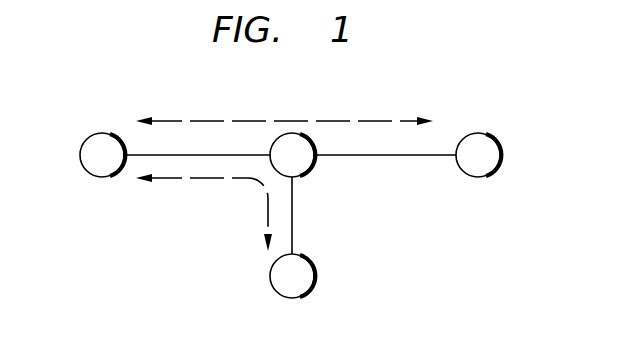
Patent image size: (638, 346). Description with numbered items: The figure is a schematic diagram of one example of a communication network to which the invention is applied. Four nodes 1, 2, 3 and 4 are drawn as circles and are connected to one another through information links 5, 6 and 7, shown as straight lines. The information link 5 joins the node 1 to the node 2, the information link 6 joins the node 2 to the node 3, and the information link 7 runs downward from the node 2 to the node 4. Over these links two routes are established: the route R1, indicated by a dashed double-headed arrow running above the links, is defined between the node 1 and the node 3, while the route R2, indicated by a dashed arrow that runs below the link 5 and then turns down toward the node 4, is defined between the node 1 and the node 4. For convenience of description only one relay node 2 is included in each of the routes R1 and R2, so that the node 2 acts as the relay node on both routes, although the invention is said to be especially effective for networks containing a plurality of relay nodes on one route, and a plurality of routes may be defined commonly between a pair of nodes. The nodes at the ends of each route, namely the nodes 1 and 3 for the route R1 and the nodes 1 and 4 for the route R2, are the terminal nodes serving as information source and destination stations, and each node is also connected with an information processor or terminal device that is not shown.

The node 1 is at (104, 177).
The relay node 2 is at (311, 167).
The node 3 is at (478, 177).
The node 4 is at (314, 276).
The information link 5 is at (186, 155).
The information link 6 is at (378, 155).
The information link 7 is at (293, 216).
The route R1 is at (199, 118).
The route R2 is at (212, 179).